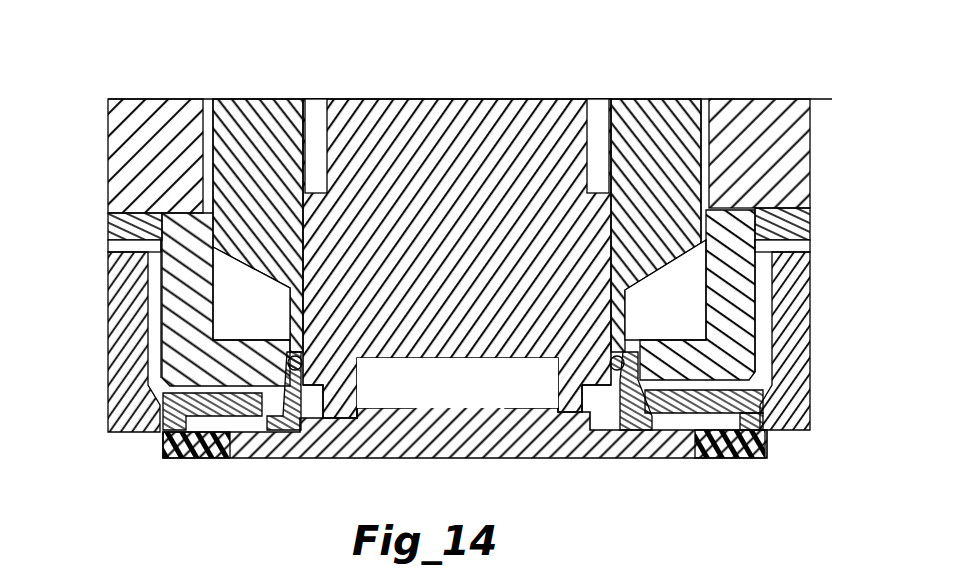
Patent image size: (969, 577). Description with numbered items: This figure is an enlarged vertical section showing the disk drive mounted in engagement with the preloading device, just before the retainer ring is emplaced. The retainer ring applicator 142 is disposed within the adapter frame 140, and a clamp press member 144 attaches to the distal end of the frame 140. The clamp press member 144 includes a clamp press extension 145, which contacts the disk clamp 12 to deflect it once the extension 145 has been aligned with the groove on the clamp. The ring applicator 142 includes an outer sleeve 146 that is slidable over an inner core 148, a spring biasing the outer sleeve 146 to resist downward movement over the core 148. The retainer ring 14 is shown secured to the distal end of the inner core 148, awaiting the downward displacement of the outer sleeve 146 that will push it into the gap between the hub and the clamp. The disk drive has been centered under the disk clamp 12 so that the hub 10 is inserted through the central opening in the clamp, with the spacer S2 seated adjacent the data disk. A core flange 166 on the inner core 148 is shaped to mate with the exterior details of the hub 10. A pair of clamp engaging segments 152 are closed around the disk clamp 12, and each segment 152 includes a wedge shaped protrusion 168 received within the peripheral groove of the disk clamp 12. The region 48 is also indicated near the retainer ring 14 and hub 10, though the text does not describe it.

The hub 10 is at (512, 446).
The disk clamp 12 is at (222, 401).
The retainer ring 14 is at (288, 402).
The contact region 48 is at (315, 402).
The adapter frame 140 is at (176, 125).
The retainer ring applicator 142 is at (420, 66).
The clamp press member 144 is at (108, 224).
The clamp press extension 145 is at (286, 336).
The outer sleeve 146 is at (270, 125).
The inner core 148 is at (515, 130).
The clamp engaging segments 152 is at (125, 302).
The core flange 166 is at (368, 403).
The wedge shaped protrusion 168 is at (165, 411).
The spacer S2 is at (176, 462).